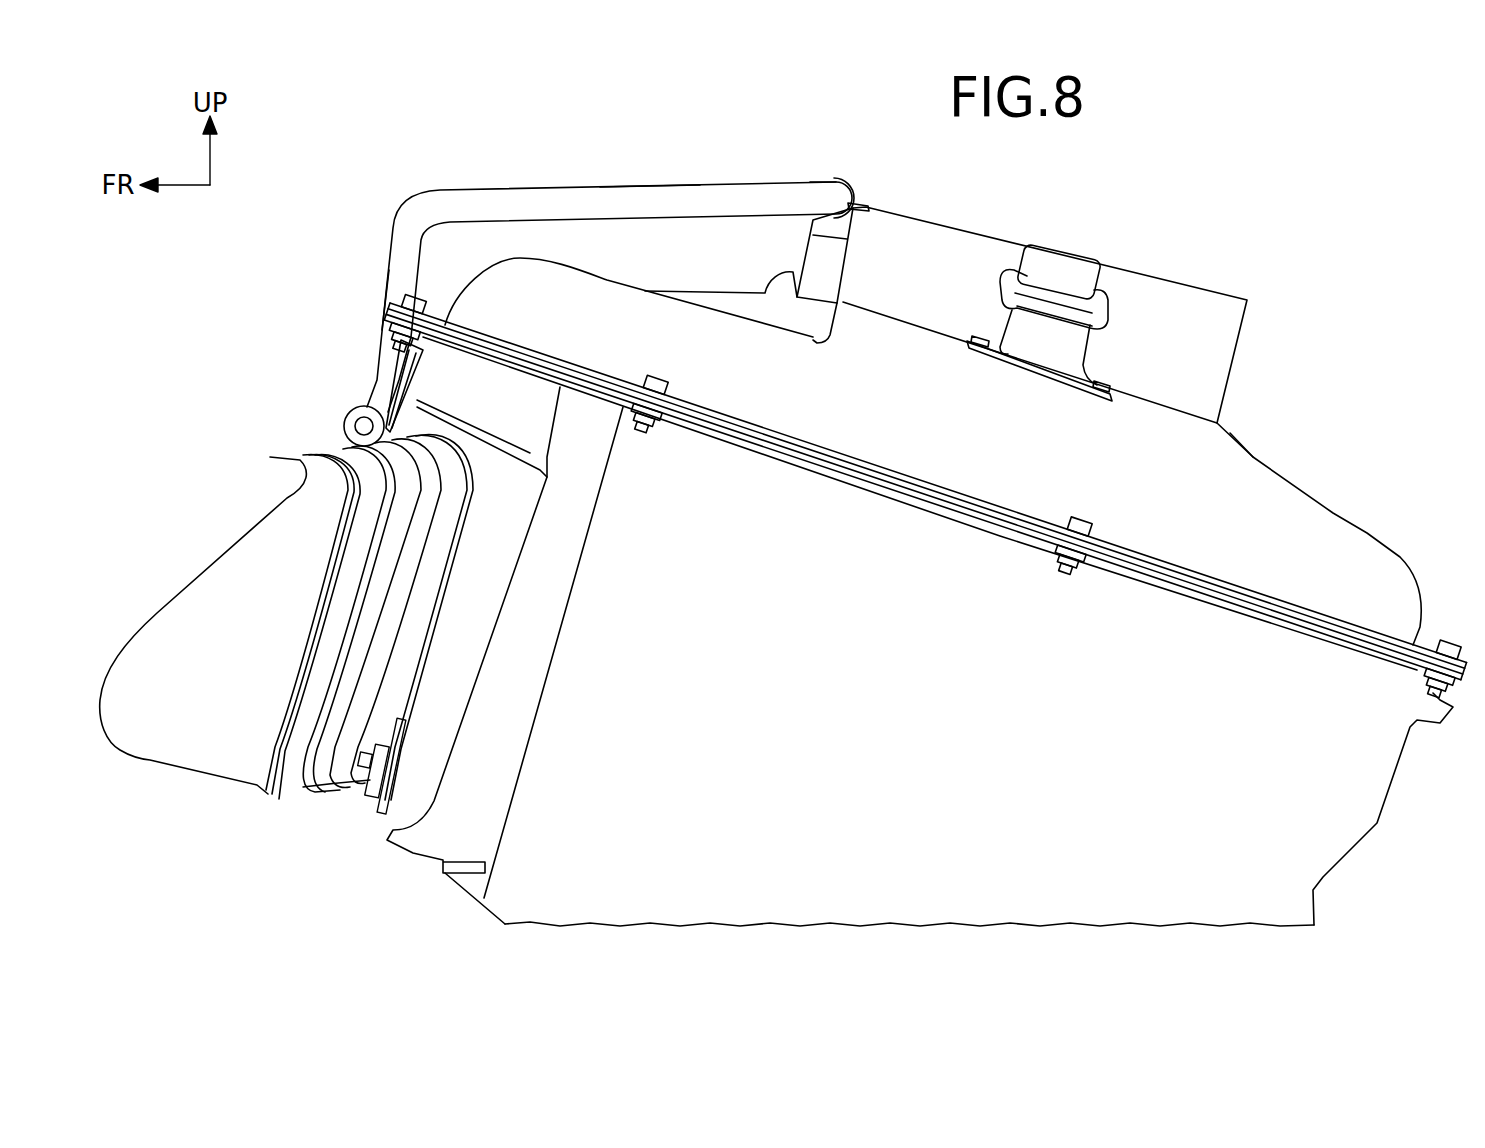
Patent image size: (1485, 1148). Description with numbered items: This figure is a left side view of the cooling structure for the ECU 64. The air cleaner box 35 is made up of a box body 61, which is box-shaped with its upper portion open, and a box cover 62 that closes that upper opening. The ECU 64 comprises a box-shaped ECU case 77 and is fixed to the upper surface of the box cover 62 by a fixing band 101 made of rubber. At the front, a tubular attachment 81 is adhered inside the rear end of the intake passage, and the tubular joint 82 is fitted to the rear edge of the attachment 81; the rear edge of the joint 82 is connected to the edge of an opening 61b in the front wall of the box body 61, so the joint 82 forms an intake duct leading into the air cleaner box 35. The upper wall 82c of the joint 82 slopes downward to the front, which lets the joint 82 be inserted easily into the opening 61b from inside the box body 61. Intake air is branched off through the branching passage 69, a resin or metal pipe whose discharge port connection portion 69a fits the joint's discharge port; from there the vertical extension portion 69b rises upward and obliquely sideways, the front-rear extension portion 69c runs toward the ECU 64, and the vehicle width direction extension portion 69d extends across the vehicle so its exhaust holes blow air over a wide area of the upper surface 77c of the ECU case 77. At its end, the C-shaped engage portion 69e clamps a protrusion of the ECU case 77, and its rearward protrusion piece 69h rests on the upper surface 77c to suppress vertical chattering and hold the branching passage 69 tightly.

The air cleaner box 35 is at (1260, 453).
The box body 61 is at (1345, 812).
The opening 61b is at (403, 688).
The box cover 62 is at (1325, 550).
The ECU 64 is at (1199, 280).
The branching passage 69 is at (525, 182).
The discharge port connection portion 69a is at (346, 420).
The vertical extension portion 69b is at (387, 288).
The front-rear extension portion 69c is at (664, 183).
The vehicle width direction extension portion 69d is at (826, 178).
The engage portion 69e is at (848, 176).
The rearward protrusion piece 69h is at (862, 205).
The ECU case 77 is at (1135, 285).
The upper surface 77c is at (980, 240).
The attachment 81 is at (156, 612).
The joint 82 is at (408, 535).
The upper wall 82c is at (413, 423).
The fixing band 101 is at (1060, 248).